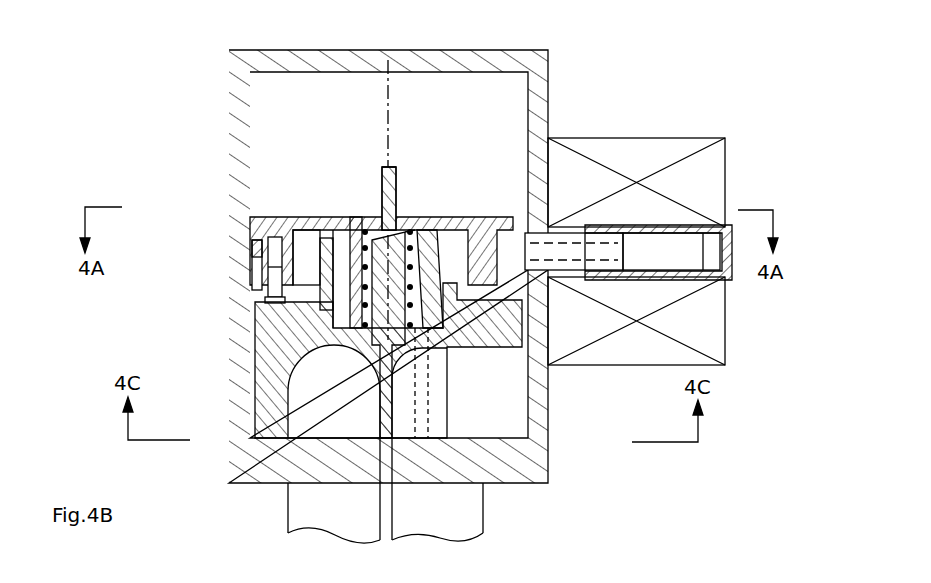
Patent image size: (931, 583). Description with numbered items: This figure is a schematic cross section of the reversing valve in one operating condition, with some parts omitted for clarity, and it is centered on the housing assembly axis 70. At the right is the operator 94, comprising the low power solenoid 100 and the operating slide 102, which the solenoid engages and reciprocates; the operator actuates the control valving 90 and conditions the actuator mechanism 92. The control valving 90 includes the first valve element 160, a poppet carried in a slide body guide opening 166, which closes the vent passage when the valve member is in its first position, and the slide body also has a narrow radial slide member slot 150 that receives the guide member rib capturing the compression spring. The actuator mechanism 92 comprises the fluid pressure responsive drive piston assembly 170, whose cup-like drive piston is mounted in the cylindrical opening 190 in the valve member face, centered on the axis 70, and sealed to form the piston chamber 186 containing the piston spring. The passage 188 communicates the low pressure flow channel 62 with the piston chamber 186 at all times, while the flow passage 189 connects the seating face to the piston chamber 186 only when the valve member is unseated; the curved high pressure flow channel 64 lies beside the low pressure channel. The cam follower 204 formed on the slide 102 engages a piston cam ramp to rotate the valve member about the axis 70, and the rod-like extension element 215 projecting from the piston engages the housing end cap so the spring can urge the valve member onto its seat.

The housing assembly axis 70 is at (392, 96).
The rod-like extension element 215 is at (397, 180).
The cam follower 204 is at (433, 214).
The operating slide 102 is at (438, 217).
The actuator mechanism 92 is at (445, 262).
The operator 94 is at (661, 182).
The low power solenoid 100 is at (683, 251).
The slide body guide opening 166 is at (273, 237).
The slide member slot 150 is at (255, 244).
The control valving 90 is at (268, 273).
The first valve element 160 is at (262, 292).
The cylindrical opening 190 is at (337, 315).
The piston chamber 186 is at (363, 317).
The drive piston assembly 170 is at (437, 330).
The passage 188 is at (355, 337).
The flow channel 62 is at (339, 421).
The flow passage 189 is at (420, 408).
The flow channel 64 is at (440, 415).